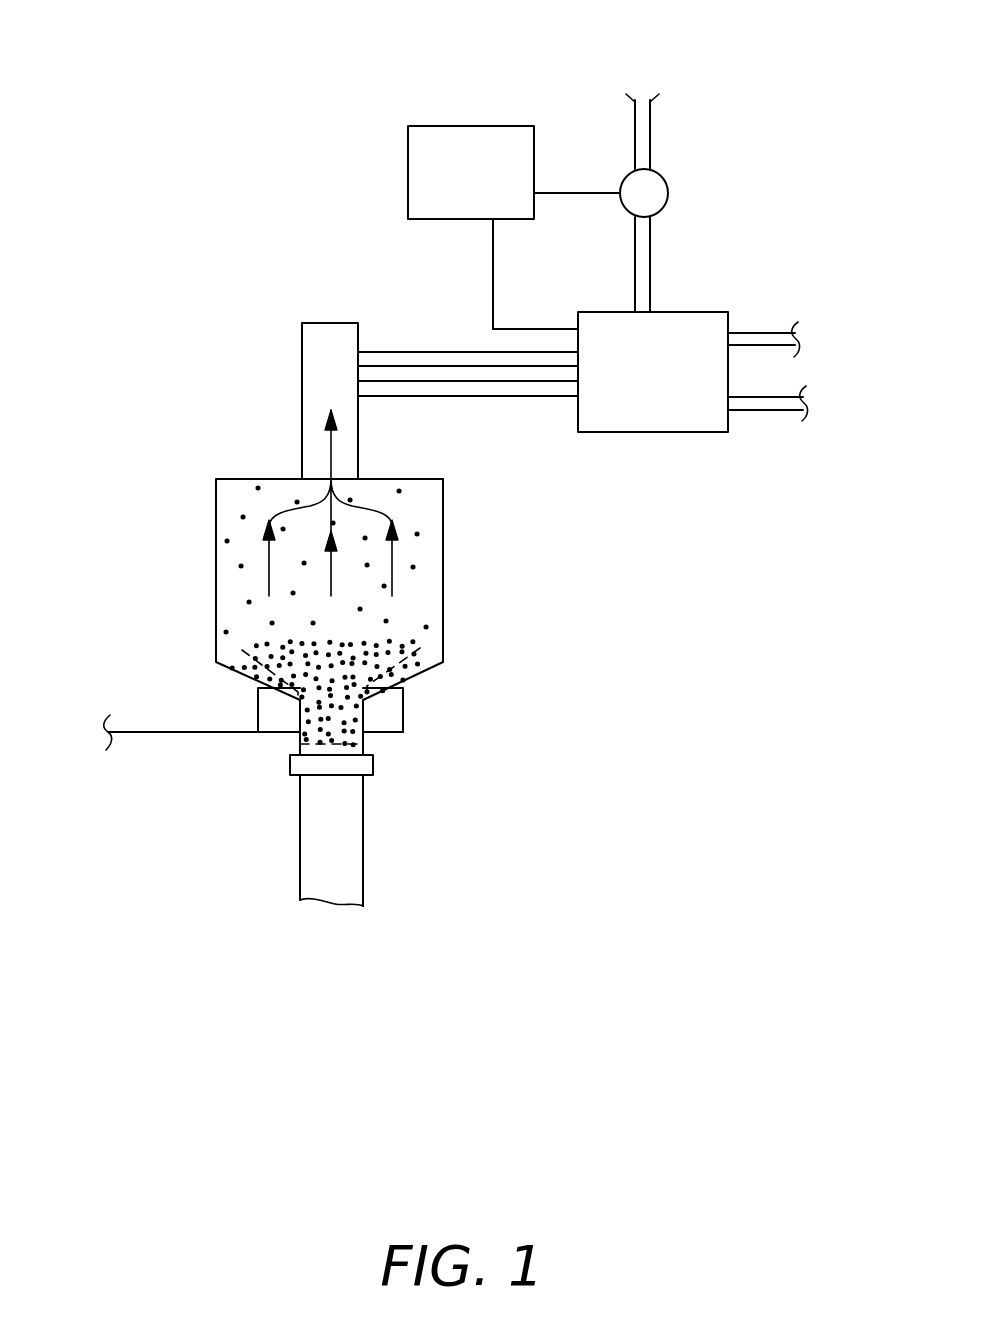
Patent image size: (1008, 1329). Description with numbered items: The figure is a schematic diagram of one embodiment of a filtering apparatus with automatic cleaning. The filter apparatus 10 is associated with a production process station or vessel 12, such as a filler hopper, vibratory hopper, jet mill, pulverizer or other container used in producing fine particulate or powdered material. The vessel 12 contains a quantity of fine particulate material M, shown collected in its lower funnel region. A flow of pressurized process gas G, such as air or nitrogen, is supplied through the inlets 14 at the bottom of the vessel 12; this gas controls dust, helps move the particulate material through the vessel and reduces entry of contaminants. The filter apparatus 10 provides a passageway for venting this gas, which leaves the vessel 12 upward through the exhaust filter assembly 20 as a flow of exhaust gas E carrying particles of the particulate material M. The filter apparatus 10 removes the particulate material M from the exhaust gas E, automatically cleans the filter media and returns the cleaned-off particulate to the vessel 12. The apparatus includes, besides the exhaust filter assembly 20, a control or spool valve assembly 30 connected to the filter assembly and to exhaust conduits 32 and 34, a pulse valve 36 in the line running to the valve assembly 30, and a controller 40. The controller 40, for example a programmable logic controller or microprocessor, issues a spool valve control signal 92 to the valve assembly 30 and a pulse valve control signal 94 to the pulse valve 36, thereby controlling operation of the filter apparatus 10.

The filter apparatus 10 is at (264, 118).
The production process station or vessel 12 is at (216, 568).
The inlets 14 is at (258, 710).
The exhaust filter assembly 20 is at (300, 365).
The control or spool valve assembly 30 is at (636, 387).
The exhaust conduit 32 is at (762, 331).
The exhaust conduit 34 is at (767, 412).
The pulse valve 36 is at (644, 192).
The controller 40 is at (470, 126).
The spool valve control signal 92 is at (493, 273).
The pulse valve control signal 94 is at (583, 193).
The flow of exhaust gas E is at (331, 454).
The fine particulate material M is at (378, 644).
The pressurized process gas G is at (200, 732).